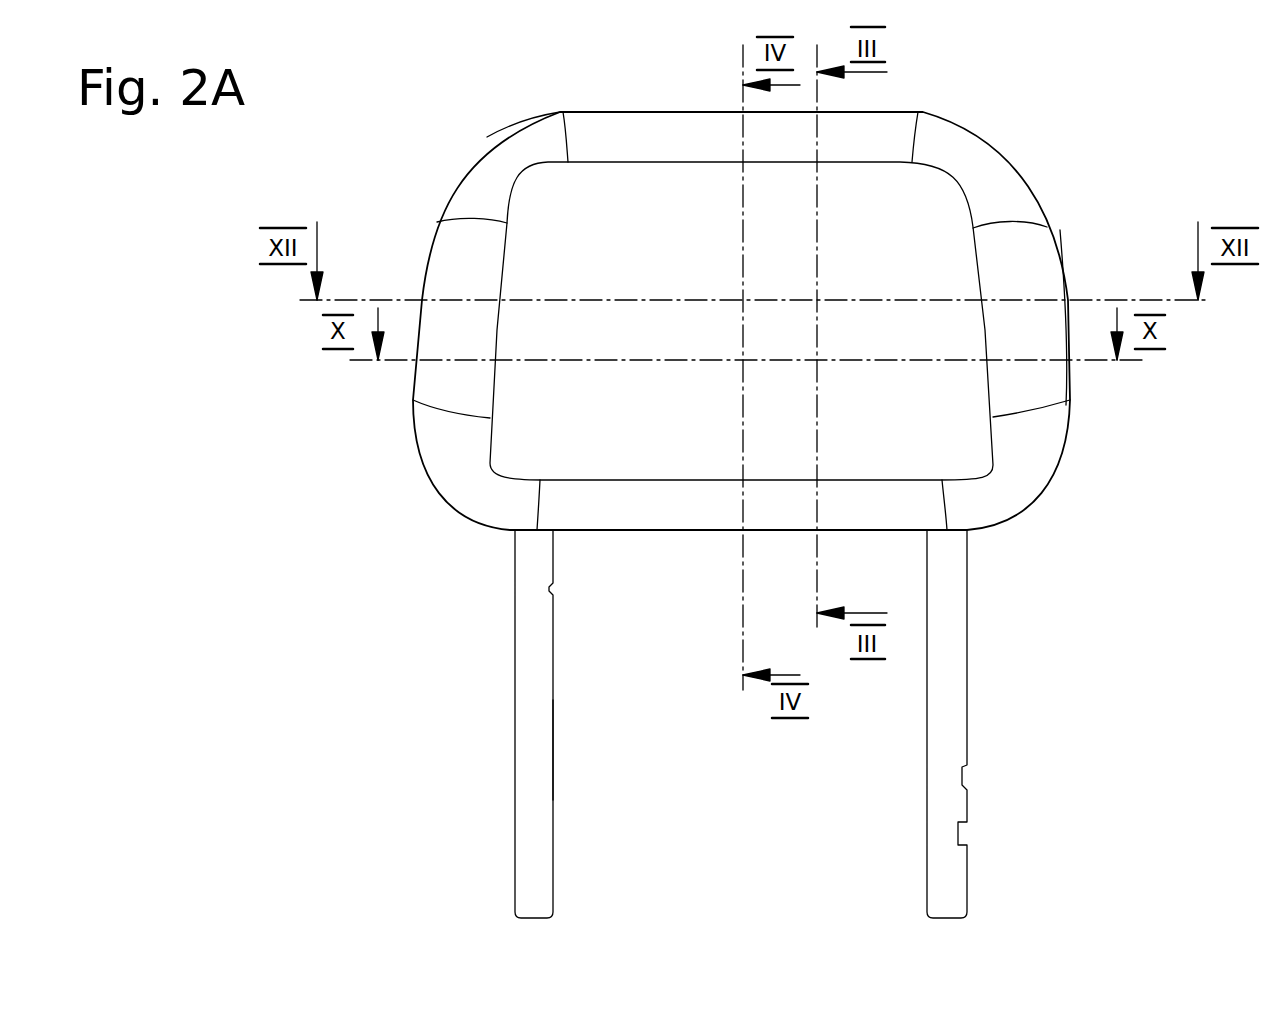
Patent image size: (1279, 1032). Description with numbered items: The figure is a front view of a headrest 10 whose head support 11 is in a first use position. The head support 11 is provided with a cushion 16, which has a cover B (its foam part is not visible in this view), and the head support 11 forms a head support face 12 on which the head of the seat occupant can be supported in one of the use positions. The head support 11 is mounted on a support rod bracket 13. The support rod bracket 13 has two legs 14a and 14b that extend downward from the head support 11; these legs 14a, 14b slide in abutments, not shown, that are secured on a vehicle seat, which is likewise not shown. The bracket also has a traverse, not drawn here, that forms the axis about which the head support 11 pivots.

The headrest 10 is at (1095, 158).
The head support 11 is at (543, 230).
The head support face 12 is at (598, 312).
The support rod bracket 13 is at (530, 650).
The leg 14a is at (540, 753).
The leg 14b is at (943, 743).
The cushion 16 is at (1020, 260).
The cover B is at (522, 143).